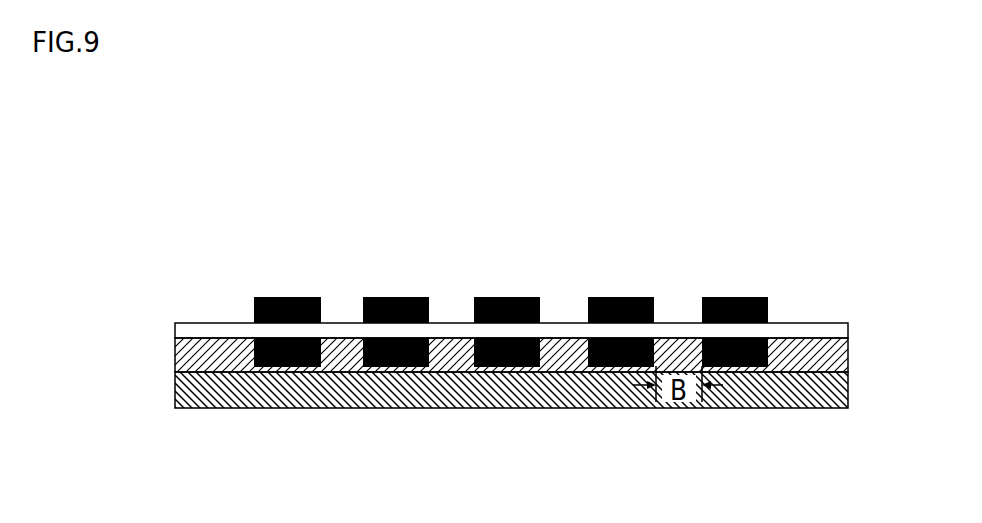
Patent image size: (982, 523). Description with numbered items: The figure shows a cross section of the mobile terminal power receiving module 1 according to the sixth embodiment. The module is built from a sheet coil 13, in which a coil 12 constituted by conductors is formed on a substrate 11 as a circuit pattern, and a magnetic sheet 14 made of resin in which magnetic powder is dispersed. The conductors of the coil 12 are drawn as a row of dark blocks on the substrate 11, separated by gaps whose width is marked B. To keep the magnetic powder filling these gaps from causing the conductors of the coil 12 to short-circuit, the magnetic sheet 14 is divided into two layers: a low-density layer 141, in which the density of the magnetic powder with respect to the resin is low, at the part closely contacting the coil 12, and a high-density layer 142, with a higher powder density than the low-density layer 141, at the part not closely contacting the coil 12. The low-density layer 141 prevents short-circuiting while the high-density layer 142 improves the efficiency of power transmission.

The mobile terminal power receiving module 1 is at (577, 341).
The substrate 11 is at (825, 333).
The coil 12 is at (768, 308).
The sheet coil 13 is at (563, 301).
The magnetic sheet 14 is at (563, 387).
The low-density layer 141 is at (830, 360).
The high-density layer 142 is at (832, 393).